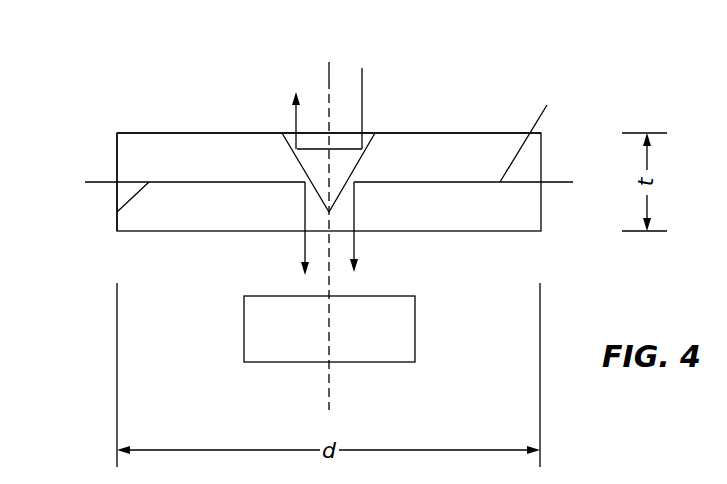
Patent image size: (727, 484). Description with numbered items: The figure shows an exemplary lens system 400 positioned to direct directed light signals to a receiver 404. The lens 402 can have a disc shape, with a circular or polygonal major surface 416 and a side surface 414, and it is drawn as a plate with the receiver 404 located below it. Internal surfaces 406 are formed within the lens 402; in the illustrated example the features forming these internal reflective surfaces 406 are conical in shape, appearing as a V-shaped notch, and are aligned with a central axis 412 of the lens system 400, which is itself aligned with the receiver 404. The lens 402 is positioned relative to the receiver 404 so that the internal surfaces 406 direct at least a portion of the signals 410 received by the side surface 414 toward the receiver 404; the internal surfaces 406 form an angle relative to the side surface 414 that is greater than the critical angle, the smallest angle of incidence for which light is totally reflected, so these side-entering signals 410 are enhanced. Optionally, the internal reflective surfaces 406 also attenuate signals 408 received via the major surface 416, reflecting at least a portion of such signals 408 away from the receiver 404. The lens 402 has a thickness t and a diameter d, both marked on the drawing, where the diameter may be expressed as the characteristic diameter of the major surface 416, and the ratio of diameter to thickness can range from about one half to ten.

The lens system 400 is at (220, 65).
The lens 402 is at (173, 133).
The receiver 404 is at (253, 328).
The internal surfaces 406 is at (300, 163).
The signals received via a major surface 408 is at (362, 90).
The signals received by a side surface 410 is at (117, 213).
The central axis 412 is at (329, 68).
The side surface 414 is at (117, 153).
The major surface 416 is at (420, 133).